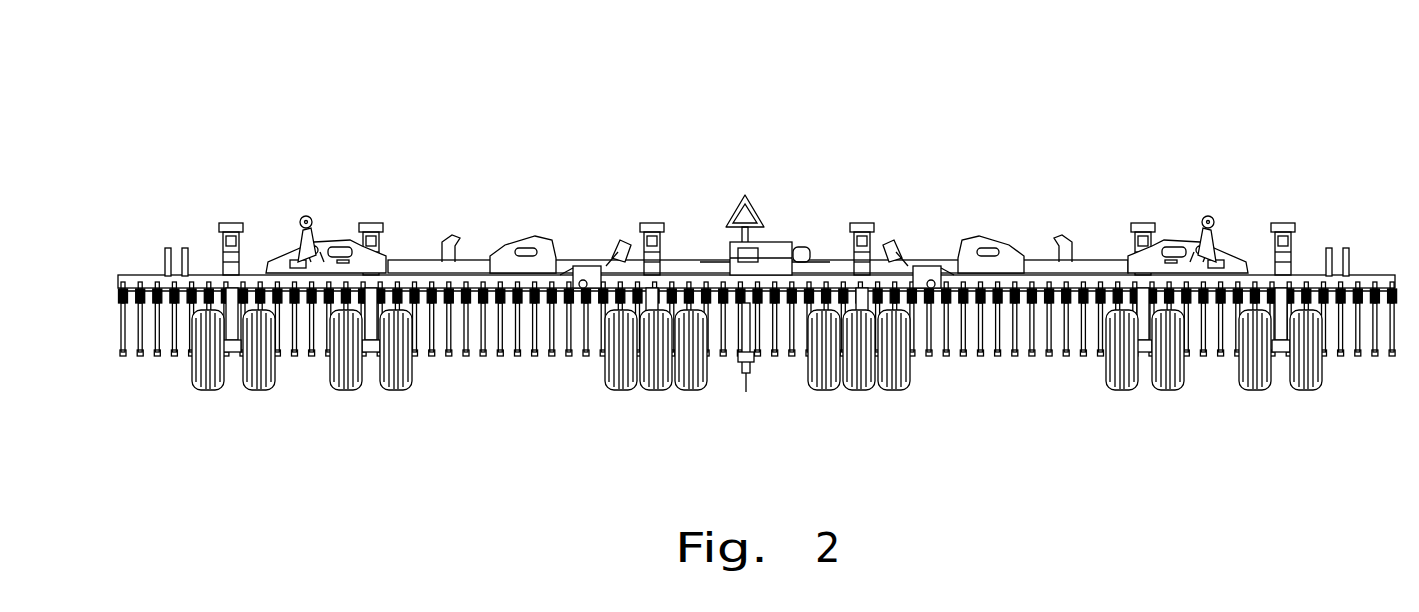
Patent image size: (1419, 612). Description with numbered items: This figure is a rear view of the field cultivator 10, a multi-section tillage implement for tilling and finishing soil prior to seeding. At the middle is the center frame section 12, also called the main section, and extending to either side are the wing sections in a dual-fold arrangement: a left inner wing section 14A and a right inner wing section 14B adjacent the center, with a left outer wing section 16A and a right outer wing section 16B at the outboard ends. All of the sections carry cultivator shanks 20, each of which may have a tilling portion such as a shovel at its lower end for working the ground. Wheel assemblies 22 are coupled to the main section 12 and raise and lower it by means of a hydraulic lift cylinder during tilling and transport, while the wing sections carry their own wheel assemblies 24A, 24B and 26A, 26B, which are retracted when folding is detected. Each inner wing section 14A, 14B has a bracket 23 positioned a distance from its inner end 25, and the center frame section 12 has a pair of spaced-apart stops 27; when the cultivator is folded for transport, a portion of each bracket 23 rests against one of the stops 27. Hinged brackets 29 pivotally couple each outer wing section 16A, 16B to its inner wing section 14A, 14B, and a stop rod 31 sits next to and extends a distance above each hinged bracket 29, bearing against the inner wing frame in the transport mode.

The field cultivator 10 is at (985, 115).
The center frame section 12 is at (746, 180).
The left inner wing section 14A is at (433, 217).
The right inner wing section 14B is at (1065, 210).
The left outer wing section 16A is at (195, 220).
The right outer wing section 16B is at (1305, 220).
The cultivator shank 20 is at (473, 355).
The wheel assembly 22 is at (805, 390).
The bracket 23 is at (545, 238).
The wheel assembly 24A is at (372, 393).
The wheel assembly 24B is at (1142, 400).
The inner end 25 is at (585, 270).
The wheel assembly 26A is at (229, 395).
The wheel assembly 26B is at (1280, 400).
The stop 27 is at (616, 250).
The hinged bracket 29 is at (324, 256).
The stop rod 31 is at (300, 243).